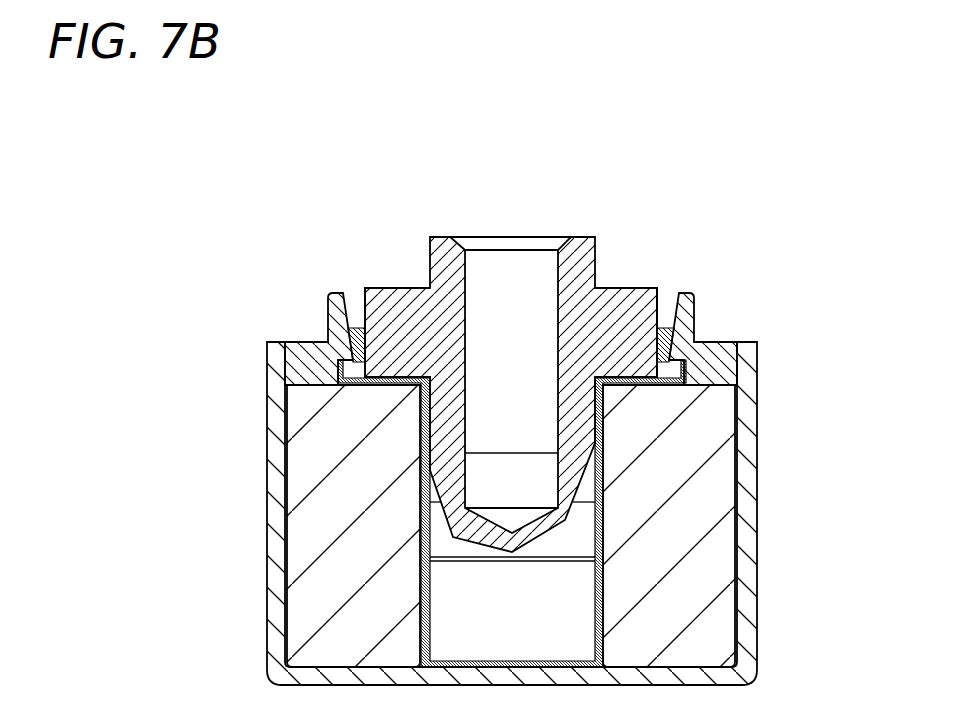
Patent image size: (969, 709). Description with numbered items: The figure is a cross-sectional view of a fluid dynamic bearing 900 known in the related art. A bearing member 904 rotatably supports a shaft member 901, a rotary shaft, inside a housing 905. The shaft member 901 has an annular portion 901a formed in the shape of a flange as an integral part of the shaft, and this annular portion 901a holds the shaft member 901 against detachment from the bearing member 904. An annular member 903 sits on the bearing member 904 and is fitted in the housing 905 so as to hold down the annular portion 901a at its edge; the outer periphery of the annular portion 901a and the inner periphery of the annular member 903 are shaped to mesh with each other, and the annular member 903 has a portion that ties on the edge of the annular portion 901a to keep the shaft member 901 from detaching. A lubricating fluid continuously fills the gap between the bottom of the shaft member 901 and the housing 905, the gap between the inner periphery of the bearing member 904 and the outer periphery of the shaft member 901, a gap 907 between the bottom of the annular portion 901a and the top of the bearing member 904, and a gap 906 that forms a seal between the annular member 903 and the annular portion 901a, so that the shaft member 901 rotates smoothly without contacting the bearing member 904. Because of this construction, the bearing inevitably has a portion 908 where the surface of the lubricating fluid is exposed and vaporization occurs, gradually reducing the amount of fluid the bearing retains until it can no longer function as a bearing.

The fluid dynamic bearing 900 is at (680, 287).
The shaft member 901 is at (578, 247).
The annular portion of the shaft member 901a is at (632, 288).
The annular member 903 is at (715, 362).
The bearing member 904 is at (720, 530).
The housing 905 is at (745, 597).
The gap forming a seal 906 is at (697, 342).
The gap 907 is at (653, 388).
The exposed lubricating fluid surface portion 908 is at (355, 289).